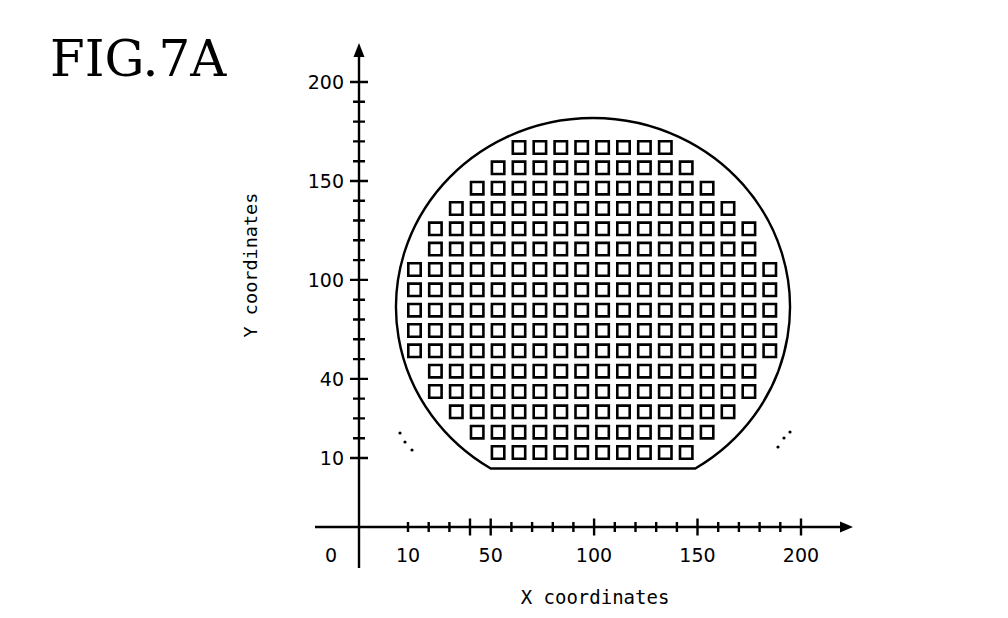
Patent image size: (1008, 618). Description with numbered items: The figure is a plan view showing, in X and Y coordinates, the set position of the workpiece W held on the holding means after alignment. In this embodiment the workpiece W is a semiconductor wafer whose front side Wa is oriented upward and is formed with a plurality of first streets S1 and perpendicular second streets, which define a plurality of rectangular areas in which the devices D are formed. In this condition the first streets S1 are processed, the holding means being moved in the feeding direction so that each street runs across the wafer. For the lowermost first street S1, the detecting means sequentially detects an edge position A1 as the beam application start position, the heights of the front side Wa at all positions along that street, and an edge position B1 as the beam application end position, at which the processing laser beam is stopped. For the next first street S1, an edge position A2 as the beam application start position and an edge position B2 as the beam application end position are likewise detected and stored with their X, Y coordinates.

The workpiece W is at (729, 95).
The front side Wa is at (770, 237).
The devices D is at (772, 309).
The first streets S1 is at (752, 380).
The edge position A1 is at (482, 463).
The edge position A2 is at (458, 445).
The edge position B1 is at (710, 463).
The edge position B2 is at (735, 442).